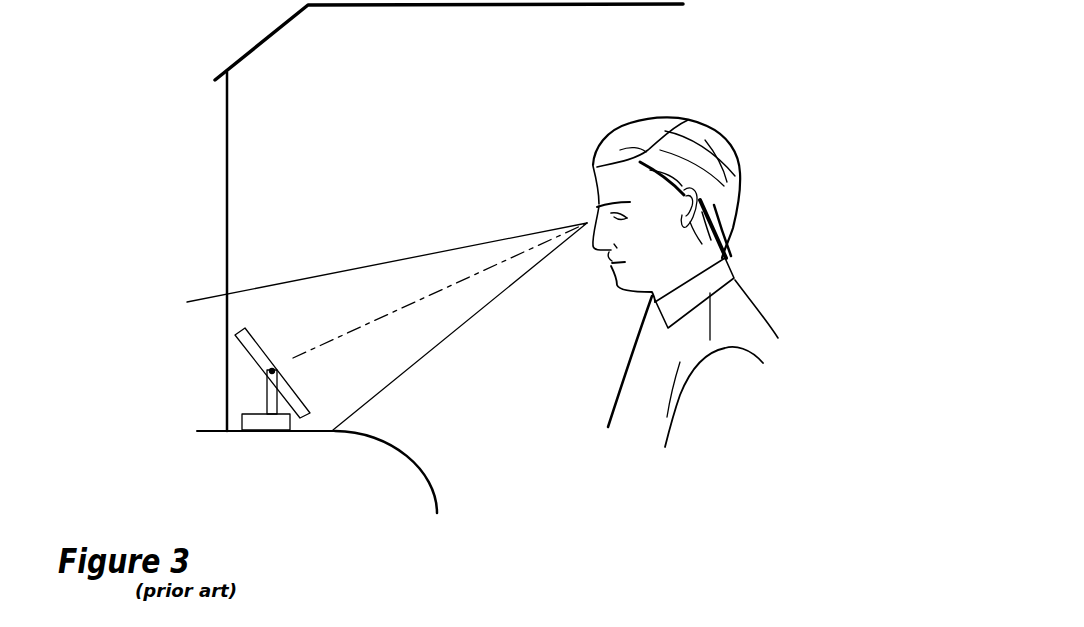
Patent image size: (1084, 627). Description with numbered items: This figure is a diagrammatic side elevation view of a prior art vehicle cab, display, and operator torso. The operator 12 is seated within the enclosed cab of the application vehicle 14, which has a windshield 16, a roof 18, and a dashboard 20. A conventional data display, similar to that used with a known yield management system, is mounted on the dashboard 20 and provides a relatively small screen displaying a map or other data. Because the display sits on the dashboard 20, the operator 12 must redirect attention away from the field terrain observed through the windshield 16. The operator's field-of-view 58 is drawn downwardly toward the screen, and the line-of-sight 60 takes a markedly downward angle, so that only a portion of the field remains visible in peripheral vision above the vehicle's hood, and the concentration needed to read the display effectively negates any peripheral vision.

The operator 12 is at (748, 282).
The application vehicle 14 is at (324, 469).
The windshield 16 is at (227, 168).
The roof 18 is at (747, 0).
The dashboard 20 is at (438, 512).
The field-of-view 58 is at (478, 243).
The line-of-sight 60 is at (418, 300).